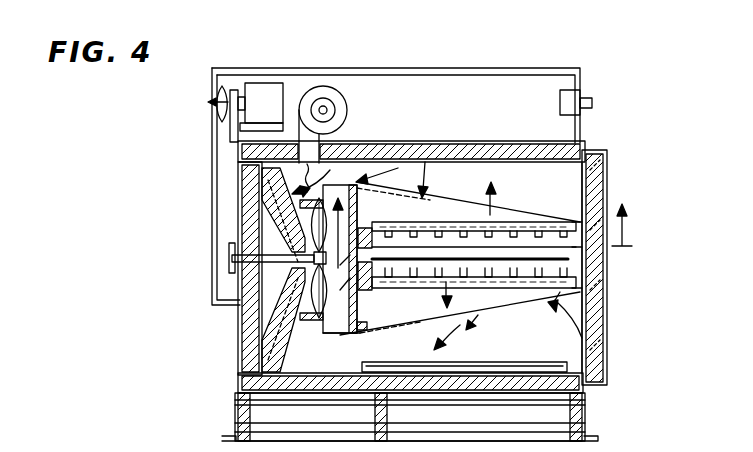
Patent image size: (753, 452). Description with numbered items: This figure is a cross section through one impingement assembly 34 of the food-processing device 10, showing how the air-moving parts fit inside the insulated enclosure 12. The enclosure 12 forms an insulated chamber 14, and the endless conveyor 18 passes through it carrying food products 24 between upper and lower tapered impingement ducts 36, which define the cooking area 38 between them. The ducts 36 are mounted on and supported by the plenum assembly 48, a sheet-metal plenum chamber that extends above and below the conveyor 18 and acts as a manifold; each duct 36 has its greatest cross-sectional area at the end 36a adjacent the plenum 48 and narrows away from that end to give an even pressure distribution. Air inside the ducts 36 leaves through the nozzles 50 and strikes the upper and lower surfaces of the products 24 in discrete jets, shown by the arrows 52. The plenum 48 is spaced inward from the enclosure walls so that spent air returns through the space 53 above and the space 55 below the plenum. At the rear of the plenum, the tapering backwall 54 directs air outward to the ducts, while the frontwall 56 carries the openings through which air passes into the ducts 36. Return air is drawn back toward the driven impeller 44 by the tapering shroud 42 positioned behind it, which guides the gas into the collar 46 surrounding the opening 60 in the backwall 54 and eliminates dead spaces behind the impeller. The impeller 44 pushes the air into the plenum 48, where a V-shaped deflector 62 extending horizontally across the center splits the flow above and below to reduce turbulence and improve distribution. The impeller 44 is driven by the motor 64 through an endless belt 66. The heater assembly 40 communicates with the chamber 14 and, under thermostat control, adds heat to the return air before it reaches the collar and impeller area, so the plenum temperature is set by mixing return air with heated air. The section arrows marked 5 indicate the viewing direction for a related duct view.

The device 10 is at (122, 287).
The insulated enclosure 12 is at (593, 149).
The chamber 14 is at (545, 160).
The endless conveyor 18 is at (603, 290).
The food products 24 is at (586, 202).
The impingement assembly 34 is at (424, 186).
The impingement duct 36 is at (548, 245).
The duct end 36a is at (414, 190).
The cooking area 38 is at (582, 338).
The heater assembly 40 is at (318, 78).
The tapering shroud 42 is at (300, 244).
The impeller 44 is at (262, 236).
The collar 46 is at (262, 286).
The plenum assembly 48 is at (352, 185).
The nozzles 50 is at (506, 250).
The arrows 52 is at (440, 224).
The space 53 is at (340, 175).
The backwall 54 is at (312, 322).
The space 55 is at (347, 361).
The frontwall 56 is at (362, 320).
The opening 60 is at (270, 318).
The V-shaped deflector 62 is at (357, 280).
The motor 64 is at (262, 82).
The endless belt 66 is at (232, 152).
The section line indicator 5 is at (622, 240).